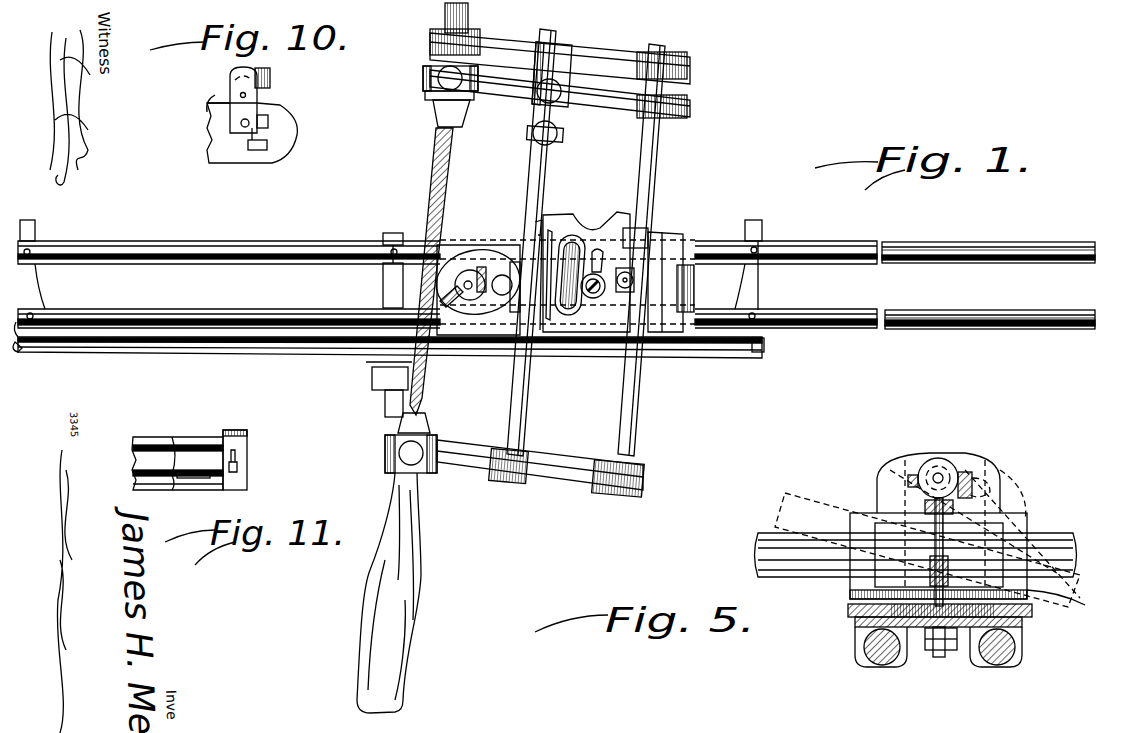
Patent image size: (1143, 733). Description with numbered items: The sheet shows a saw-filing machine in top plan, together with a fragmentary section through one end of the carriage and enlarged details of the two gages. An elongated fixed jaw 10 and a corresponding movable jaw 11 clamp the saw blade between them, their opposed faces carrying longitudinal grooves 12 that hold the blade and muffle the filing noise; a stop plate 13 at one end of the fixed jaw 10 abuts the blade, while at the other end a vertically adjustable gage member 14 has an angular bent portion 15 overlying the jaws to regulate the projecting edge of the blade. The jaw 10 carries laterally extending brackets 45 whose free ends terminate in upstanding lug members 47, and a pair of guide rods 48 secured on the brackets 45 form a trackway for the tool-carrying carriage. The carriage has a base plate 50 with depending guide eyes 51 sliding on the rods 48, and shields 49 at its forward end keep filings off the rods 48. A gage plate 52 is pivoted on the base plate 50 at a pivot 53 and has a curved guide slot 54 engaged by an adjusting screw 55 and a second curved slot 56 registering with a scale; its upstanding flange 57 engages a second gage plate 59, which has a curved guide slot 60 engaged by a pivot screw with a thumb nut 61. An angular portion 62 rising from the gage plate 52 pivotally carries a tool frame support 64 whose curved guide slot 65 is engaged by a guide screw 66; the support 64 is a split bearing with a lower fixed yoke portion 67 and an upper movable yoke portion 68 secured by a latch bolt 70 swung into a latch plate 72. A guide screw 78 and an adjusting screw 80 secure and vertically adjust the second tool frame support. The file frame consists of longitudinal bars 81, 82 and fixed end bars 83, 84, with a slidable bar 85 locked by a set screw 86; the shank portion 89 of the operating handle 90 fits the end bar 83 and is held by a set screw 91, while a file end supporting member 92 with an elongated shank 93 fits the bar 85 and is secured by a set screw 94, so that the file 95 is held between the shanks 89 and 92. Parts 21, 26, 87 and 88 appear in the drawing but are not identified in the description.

In FIG. 10, the fixed jaw 10 is at (212, 112).
In FIG. 11, the fixed jaw 10 is at (205, 440).
In FIG. 1, the fixed jaw 10 is at (246, 312).
In FIG. 10, the movable jaw 11 is at (287, 134).
In FIG. 11, the movable jaw 11 is at (163, 442).
In FIG. 1, the movable jaw 11 is at (262, 350).
In FIG. 10, the grooves 12 is at (257, 150).
In FIG. 11, the grooves 12 is at (188, 478).
In FIG. 10, the stop plate 13 is at (270, 80).
In FIG. 1, the stop plate 13 is at (18, 342).
In FIG. 11, the gage member 14 is at (247, 462).
In FIG. 11, the angular bent portion 15 is at (247, 438).
In FIG. 1, the angular bent portion 15 is at (764, 345).
In FIG. 1, the lower clamp block 21 is at (390, 410).
In FIG. 1, the bracket 26 is at (372, 380).
In FIG. 1, the arms or brackets 45 is at (36, 286).
In FIG. 1, the upstanding lug members 47 is at (30, 220).
In FIG. 10, the guide rods 48 is at (231, 74).
In FIG. 1, the guide rods 48 is at (957, 245).
In FIG. 5, the guide rods 48 is at (884, 668).
In FIG. 1, the shields 49 is at (410, 245).
In FIG. 5, the base plate 50 is at (968, 622).
In FIG. 5, the guide eyes or members 51 is at (855, 645).
In FIG. 1, the gage plate 52 is at (565, 215).
In FIG. 5, the gage plate 52 is at (848, 610).
In FIG. 5, the pivot 53 is at (935, 652).
In FIG. 1, the curved guide slot 54 is at (600, 250).
In FIG. 1, the adjusting screw 55 is at (592, 300).
In FIG. 1, the second curved slot 56 is at (571, 250).
In FIG. 1, the upstanding flange 57 is at (537, 222).
In FIG. 1, the second gage plate 59 is at (474, 305).
In FIG. 1, the curved guide slot 60 is at (503, 275).
In FIG. 1, the thumb nut 61 is at (467, 270).
In FIG. 1, the angular portion 62 is at (690, 283).
In FIG. 1, the tool frame support 64 is at (672, 255).
In FIG. 5, the tool frame support 64 is at (930, 458).
In FIG. 5, the curved guide slot 65 is at (975, 478).
In FIG. 1, the guide screw 66 is at (634, 274).
In FIG. 5, the guide screw 66 is at (948, 478).
In FIG. 5, the lower fixed yoke portion 67 is at (1069, 605).
In FIG. 5, the upper movable yoke portion 68 is at (850, 525).
In FIG. 5, the latch bolt 70 is at (1003, 525).
In FIG. 5, the latch plate 72 is at (865, 510).
In FIG. 1, the guide screw 78 is at (481, 266).
In FIG. 1, the adjusting screw 80 is at (507, 298).
In FIG. 5, the adjusting screw 80 is at (960, 510).
In FIG. 1, the longitudinal bar 81 is at (508, 408).
In FIG. 5, the longitudinal bar 81 is at (1060, 546).
In FIG. 1, the longitudinal bar 82 is at (633, 403).
In FIG. 1, the fixed end bar 83 is at (552, 468).
In FIG. 1, the fixed end bar 84 is at (585, 53).
In FIG. 1, the slidable bar 85 is at (612, 106).
In FIG. 1, the set screw 86 is at (545, 94).
In FIG. 1, the clamp screw 87 is at (540, 133).
In FIG. 1, the clamp ears 88 is at (536, 139).
In FIG. 1, the shank portion 89 is at (428, 430).
In FIG. 1, the operating handle 90 is at (410, 578).
In FIG. 1, the set screw 91 is at (398, 458).
In FIG. 1, the tool or file end supporting member 92 is at (435, 112).
In FIG. 1, the elongated shank 93 is at (446, 18).
In FIG. 1, the set screw 94 is at (447, 78).
In FIG. 1, the tool or file 95 is at (437, 178).